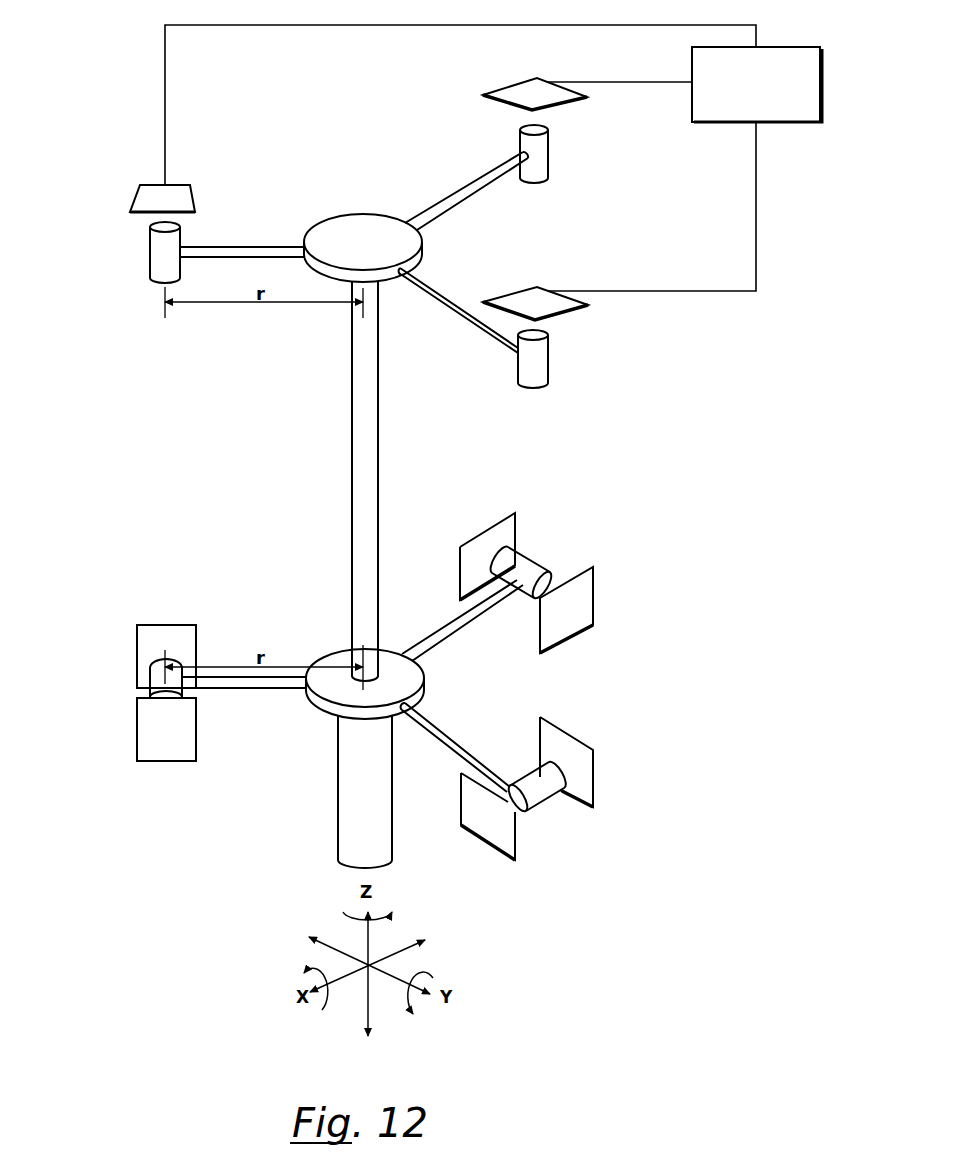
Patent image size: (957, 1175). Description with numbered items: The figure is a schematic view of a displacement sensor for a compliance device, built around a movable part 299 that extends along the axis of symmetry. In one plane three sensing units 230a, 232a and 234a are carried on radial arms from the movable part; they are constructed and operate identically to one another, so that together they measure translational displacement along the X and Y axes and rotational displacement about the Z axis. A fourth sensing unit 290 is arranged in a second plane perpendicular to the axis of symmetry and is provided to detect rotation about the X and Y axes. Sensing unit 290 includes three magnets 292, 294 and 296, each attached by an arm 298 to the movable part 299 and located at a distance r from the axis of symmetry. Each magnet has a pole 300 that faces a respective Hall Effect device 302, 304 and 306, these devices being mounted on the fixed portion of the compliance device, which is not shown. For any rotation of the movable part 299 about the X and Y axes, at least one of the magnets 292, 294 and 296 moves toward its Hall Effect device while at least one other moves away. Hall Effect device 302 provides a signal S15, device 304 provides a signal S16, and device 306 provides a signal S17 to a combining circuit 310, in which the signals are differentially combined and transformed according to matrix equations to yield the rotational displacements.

The fourth sensing unit 290 is at (403, 139).
The magnet 292 is at (150, 268).
The magnet 294 is at (548, 167).
The magnet 296 is at (548, 368).
The arm 298 is at (487, 188).
The movable part 299 is at (380, 457).
The pole 300 is at (150, 228).
The Hall Effect device 302 is at (195, 197).
The Hall Effect device 304 is at (543, 80).
The Hall Effect device 306 is at (545, 290).
The combining circuit 310 is at (806, 12).
The sensing unit 230a is at (122, 689).
The sensing unit 232a is at (577, 546).
The sensing unit 234a is at (551, 815).
The signal S15 is at (457, 25).
The signal S16 is at (657, 84).
The signal S17 is at (678, 292).